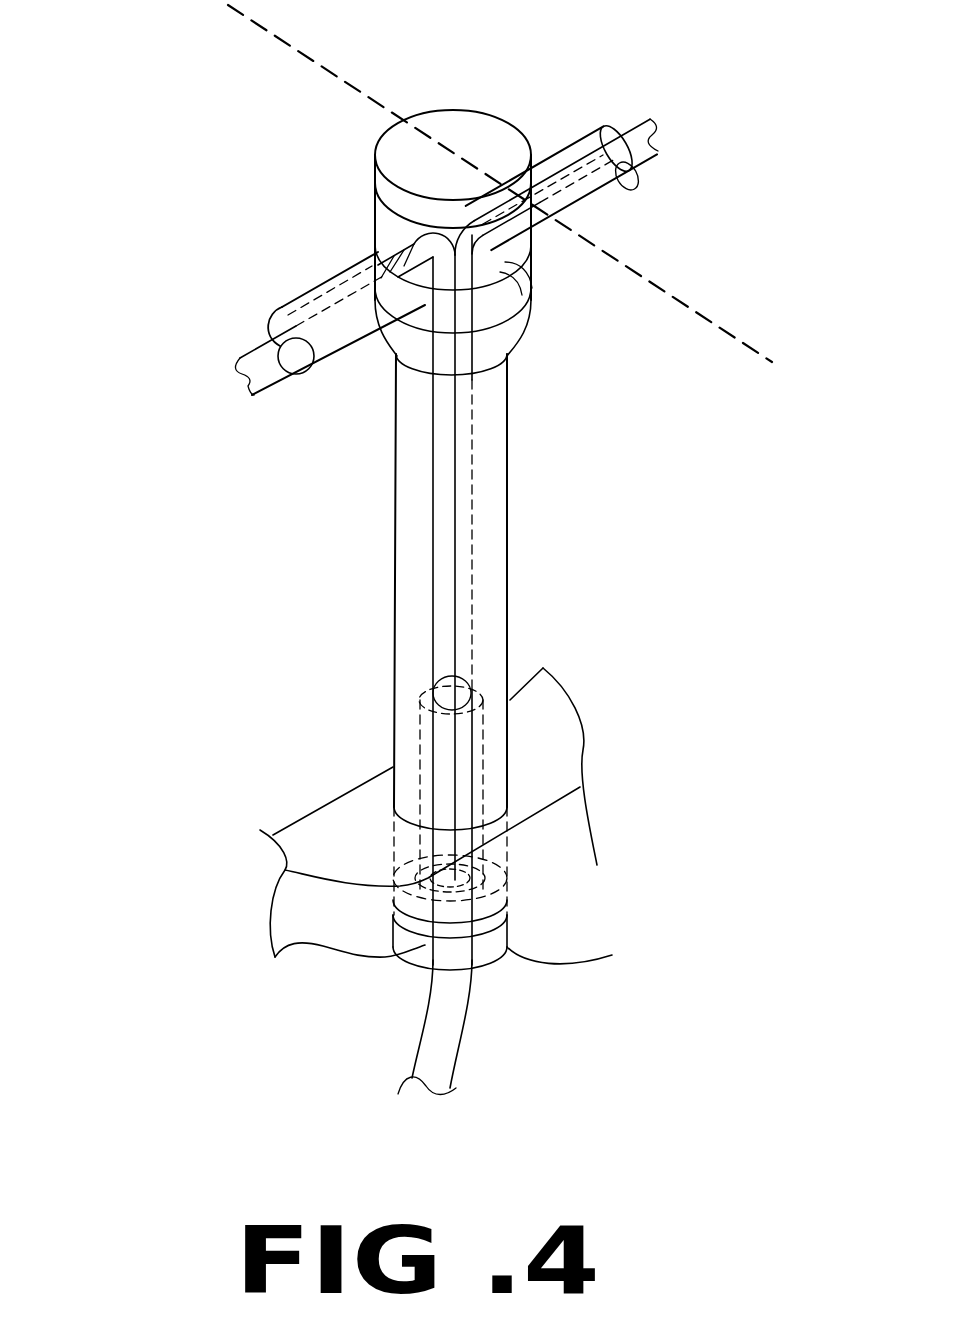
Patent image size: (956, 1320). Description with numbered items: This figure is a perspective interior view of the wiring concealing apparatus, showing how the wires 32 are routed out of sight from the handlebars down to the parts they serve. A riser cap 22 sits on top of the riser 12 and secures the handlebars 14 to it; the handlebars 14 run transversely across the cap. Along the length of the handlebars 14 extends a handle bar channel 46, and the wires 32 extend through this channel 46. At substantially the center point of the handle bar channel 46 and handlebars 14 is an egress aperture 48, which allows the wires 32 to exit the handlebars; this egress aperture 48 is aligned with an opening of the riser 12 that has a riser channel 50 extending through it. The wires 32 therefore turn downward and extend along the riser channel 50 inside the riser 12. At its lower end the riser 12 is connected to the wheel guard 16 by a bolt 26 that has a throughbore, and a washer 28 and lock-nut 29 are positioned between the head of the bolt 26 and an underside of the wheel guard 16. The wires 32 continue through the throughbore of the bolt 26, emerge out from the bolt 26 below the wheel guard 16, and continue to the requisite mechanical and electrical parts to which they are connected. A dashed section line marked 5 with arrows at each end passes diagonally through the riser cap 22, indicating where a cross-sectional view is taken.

The section line 5- 5 is at (224, 98).
The riser 12 is at (482, 588).
The handlebars 14 is at (592, 202).
The wheel guard 16 is at (328, 815).
The cap 22 is at (442, 118).
The bolt 26 is at (616, 955).
The washer 28 is at (433, 945).
The lock-nut 29 is at (507, 905).
The wires 32 is at (637, 155).
The handle bar channel 46 is at (300, 308).
The egress aperture 48 is at (475, 255).
The riser channel 50 is at (457, 648).